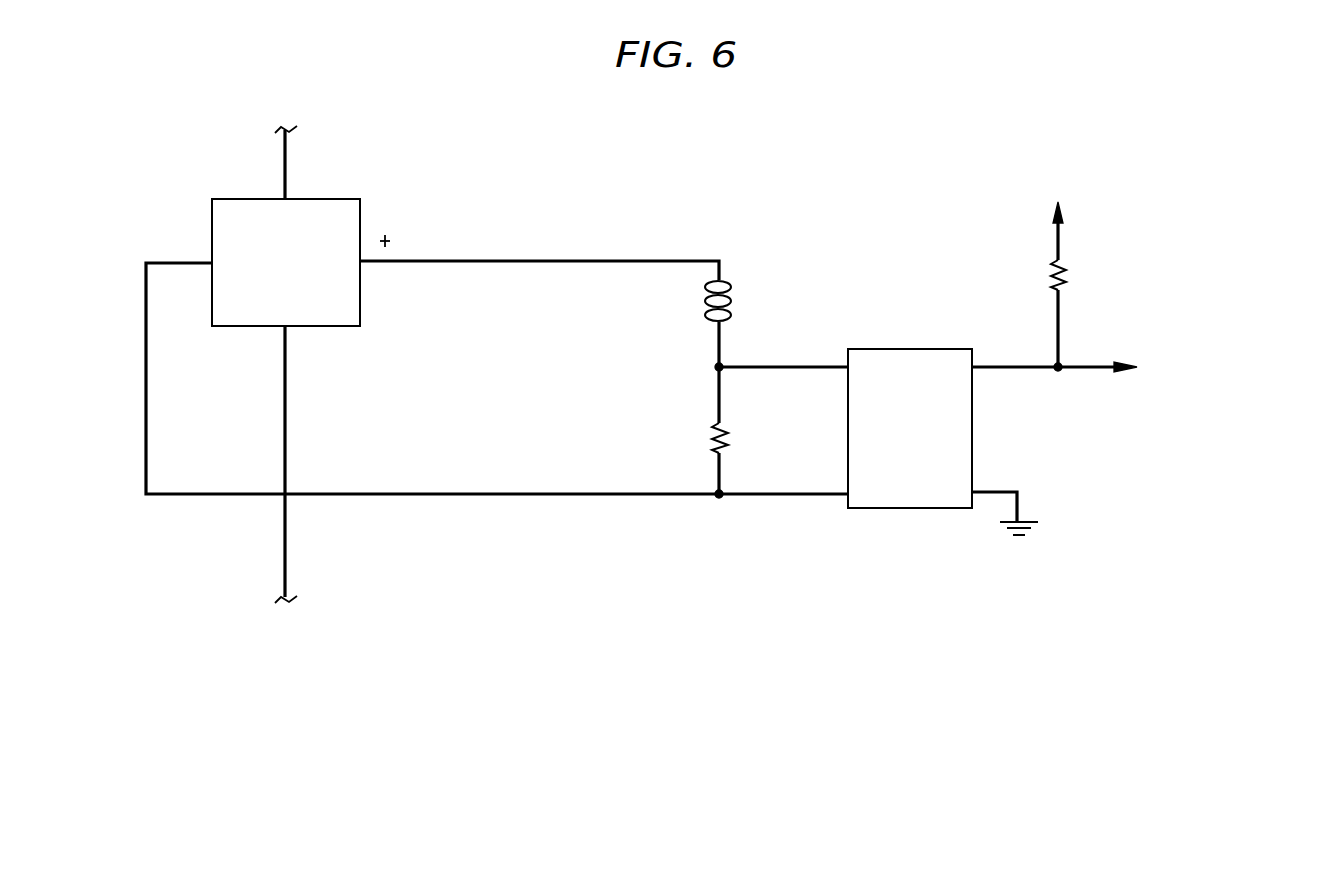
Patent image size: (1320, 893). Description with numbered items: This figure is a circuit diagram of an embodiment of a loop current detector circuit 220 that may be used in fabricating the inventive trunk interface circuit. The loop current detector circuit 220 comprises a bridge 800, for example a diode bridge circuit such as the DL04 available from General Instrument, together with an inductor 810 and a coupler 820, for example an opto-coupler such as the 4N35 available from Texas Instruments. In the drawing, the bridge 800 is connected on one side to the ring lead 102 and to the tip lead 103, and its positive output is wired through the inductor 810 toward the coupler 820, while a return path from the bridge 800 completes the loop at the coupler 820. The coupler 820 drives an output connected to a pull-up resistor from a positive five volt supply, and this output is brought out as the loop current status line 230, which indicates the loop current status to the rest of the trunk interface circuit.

The loop current detector circuit 220 is at (559, 138).
The bridge 800 is at (212, 217).
The ring lead 102 is at (286, 143).
The tip lead 103 is at (289, 485).
The inductor 810 is at (726, 288).
The coupler 820 is at (848, 508).
The loop current status line 230 is at (1127, 379).